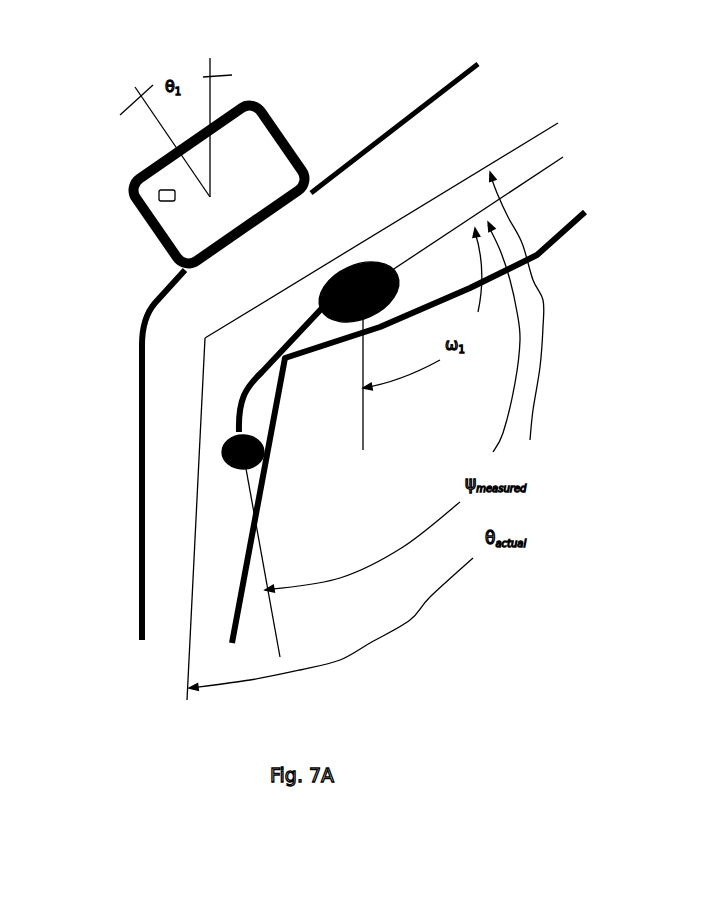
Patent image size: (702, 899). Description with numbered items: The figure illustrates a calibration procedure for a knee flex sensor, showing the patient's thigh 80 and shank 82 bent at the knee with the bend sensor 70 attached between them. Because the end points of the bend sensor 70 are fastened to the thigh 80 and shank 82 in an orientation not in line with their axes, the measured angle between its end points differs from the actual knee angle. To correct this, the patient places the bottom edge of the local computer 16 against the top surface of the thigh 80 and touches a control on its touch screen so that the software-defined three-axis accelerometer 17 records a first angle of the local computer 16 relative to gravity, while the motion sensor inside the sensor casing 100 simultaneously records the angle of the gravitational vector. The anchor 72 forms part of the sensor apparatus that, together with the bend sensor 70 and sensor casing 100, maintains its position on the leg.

The local computer 16 is at (252, 88).
The three-axis accelerometer 17 is at (153, 200).
The bend sensor 70 is at (240, 367).
The anchor 72 is at (212, 454).
The thigh 80 is at (424, 94).
The shank 82 is at (133, 450).
The sensor casing 100 is at (375, 252).